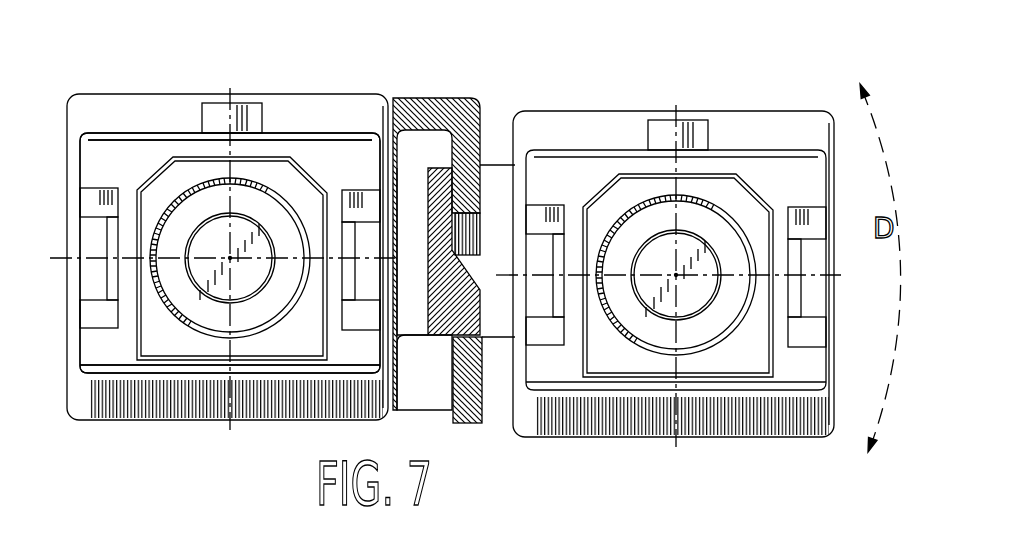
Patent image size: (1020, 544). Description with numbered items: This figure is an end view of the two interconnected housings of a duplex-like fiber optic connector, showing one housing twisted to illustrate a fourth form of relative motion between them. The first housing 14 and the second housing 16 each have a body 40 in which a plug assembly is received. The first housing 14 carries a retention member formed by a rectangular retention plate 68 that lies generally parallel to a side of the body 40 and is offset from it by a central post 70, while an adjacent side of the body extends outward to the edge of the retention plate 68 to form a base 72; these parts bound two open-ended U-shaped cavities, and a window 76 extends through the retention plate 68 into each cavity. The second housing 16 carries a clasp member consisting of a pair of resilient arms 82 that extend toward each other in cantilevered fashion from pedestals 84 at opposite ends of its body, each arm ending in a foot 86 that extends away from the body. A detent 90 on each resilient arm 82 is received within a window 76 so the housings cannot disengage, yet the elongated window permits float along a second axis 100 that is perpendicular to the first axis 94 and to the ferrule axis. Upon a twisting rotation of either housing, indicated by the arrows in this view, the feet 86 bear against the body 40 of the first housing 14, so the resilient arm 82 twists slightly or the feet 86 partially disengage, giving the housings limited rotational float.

The first housing 14 is at (222, 285).
The second housing 16 is at (787, 440).
The body 40 is at (285, 421).
The retention plate 68 is at (468, 425).
The central post 70 is at (437, 395).
The base 72 is at (455, 98).
The window 76 is at (468, 252).
The resilient arm 82 is at (444, 166).
The pedestal 84 is at (498, 198).
The foot 86 is at (430, 254).
The detent 90 is at (483, 337).
The first axis 94 is at (132, 250).
The second axis 100 is at (237, 96).